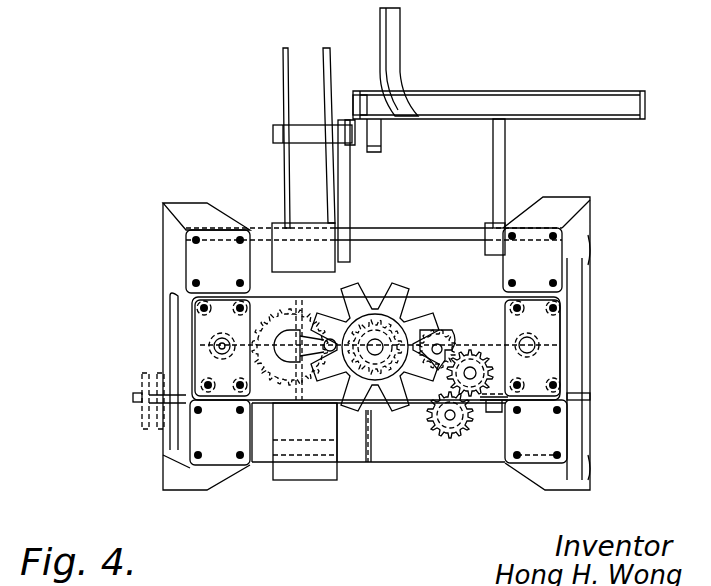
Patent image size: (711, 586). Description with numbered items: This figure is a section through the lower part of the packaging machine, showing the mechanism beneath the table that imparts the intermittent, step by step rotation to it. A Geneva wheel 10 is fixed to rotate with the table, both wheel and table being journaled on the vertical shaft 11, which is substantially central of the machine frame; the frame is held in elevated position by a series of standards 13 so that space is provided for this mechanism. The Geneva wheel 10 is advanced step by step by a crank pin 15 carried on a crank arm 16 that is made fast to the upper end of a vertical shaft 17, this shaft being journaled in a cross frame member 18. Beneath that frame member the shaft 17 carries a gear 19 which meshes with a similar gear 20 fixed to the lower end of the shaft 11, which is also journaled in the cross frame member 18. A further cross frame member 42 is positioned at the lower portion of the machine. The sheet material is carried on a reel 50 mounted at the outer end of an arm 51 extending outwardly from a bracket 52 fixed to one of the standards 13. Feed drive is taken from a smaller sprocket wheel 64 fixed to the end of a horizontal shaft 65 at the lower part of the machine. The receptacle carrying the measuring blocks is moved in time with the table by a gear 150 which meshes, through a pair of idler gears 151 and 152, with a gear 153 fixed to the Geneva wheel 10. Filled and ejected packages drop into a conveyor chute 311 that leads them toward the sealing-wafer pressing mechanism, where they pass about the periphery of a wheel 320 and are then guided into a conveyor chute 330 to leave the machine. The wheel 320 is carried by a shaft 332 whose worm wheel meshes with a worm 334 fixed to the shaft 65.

The Geneva wheel 10 is at (382, 298).
The vertical shaft 11 is at (438, 345).
The standards 13 is at (210, 235).
The crank pin 15 is at (328, 340).
The crank arm 16 is at (298, 338).
The vertical shaft 17 is at (290, 340).
The cross frame member 18 is at (474, 302).
The gear 19 is at (289, 398).
The gear 20 is at (365, 418).
The cross frame member 42 is at (395, 232).
The reel 50 is at (282, 80).
The arm 51 is at (350, 193).
The bracket 52 is at (268, 233).
The sprocket wheel 64 is at (145, 375).
The horizontal shaft 65 is at (133, 400).
The gear 150 is at (468, 424).
The idler gear 151 is at (525, 338).
The idler gear 152 is at (468, 356).
The gear 153 is at (394, 410).
The conveyor chute 311 is at (381, 143).
The wheel 320 is at (473, 96).
The conveyor chute 330 is at (392, 44).
The shaft 332 is at (494, 167).
The worm 334 is at (507, 420).